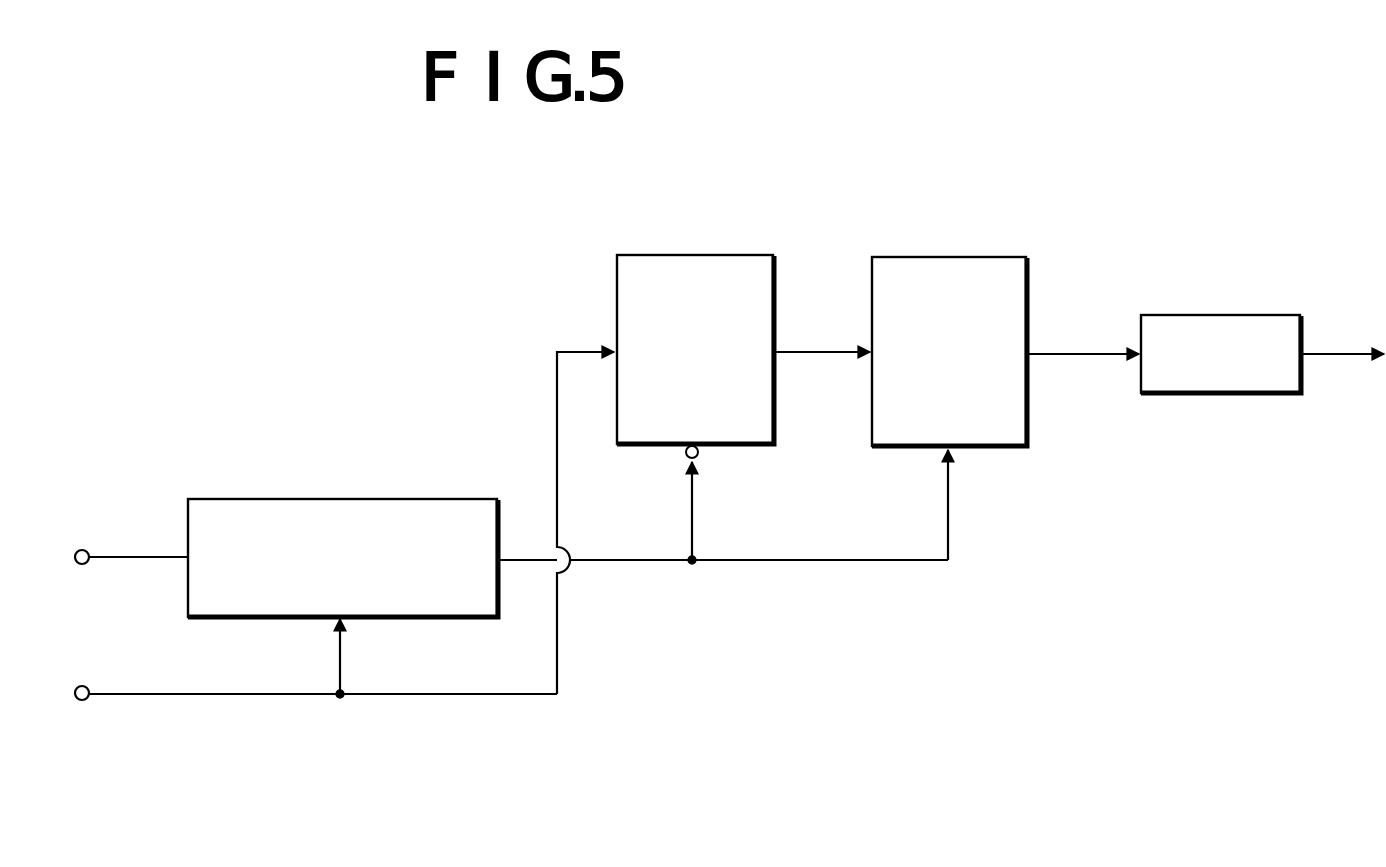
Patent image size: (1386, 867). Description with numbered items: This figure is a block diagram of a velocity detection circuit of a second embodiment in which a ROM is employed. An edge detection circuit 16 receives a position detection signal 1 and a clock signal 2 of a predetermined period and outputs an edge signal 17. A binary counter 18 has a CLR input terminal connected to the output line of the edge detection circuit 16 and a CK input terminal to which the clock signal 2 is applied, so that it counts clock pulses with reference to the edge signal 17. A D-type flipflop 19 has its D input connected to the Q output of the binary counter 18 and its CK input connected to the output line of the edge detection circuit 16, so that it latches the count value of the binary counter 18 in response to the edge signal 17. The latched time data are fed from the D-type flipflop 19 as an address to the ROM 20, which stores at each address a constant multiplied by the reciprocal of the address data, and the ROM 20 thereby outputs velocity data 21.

The position detection signal 1 is at (82, 550).
The clock signal 2 is at (82, 700).
The edge detection circuit 16 is at (376, 499).
The edge signal 17 is at (776, 562).
The binary counter 18 is at (720, 255).
The D-type flipflop 19 is at (933, 257).
The ROM 20 is at (1213, 315).
The velocity data 21 is at (1346, 353).